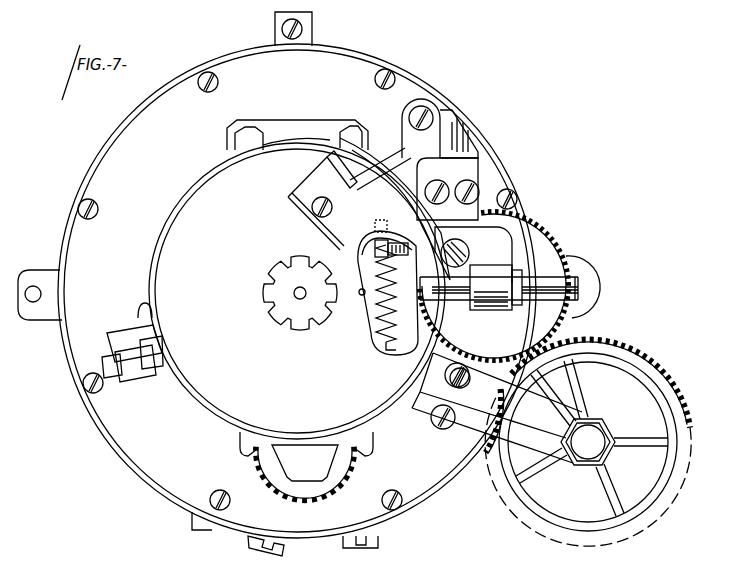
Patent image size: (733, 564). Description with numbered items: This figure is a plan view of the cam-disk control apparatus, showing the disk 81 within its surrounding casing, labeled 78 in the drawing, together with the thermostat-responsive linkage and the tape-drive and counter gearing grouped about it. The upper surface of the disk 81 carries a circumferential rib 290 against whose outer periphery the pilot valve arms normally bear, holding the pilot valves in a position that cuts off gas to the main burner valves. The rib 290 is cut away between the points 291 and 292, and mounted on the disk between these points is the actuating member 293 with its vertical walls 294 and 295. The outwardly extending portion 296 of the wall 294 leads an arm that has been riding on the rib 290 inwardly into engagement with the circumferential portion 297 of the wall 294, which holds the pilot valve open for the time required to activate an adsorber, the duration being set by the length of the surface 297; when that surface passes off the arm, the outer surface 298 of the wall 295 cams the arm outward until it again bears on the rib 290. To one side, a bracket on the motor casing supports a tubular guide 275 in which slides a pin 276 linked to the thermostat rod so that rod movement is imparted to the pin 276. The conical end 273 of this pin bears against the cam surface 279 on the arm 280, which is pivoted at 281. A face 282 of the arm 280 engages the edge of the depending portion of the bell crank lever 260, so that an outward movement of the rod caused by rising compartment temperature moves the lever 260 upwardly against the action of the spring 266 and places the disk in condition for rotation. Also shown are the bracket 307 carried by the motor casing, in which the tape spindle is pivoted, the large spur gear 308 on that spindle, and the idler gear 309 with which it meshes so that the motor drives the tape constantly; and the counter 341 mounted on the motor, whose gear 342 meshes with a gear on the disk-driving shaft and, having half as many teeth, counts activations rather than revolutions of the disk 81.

The housing 78 is at (112, 163).
The disk 81 is at (157, 235).
The circumferential rib 290 is at (188, 200).
The point 291 is at (326, 155).
The actuating member 293 is at (312, 180).
The vertical wall 295 is at (295, 203).
The outer surface 298 is at (350, 166).
The vertical wall 294 is at (385, 183).
The outwardly extending portion 296 is at (448, 189).
The circumferential portion 297 is at (395, 201).
The point 292 is at (497, 228).
The pivot 281 is at (469, 253).
The pin 276 is at (547, 283).
The conical end 273 is at (433, 318).
The tubular guide 275 is at (503, 311).
The cam surface 279 is at (392, 264).
The bell crank lever 260 is at (360, 264).
The face 282 is at (340, 262).
The arm 280 is at (365, 278).
The spring 266 is at (360, 293).
The idler gear 309 is at (580, 335).
The large spur gear 308 is at (657, 362).
The bracket 307 is at (463, 427).
The counter 341 is at (288, 455).
The gear 342 is at (268, 467).